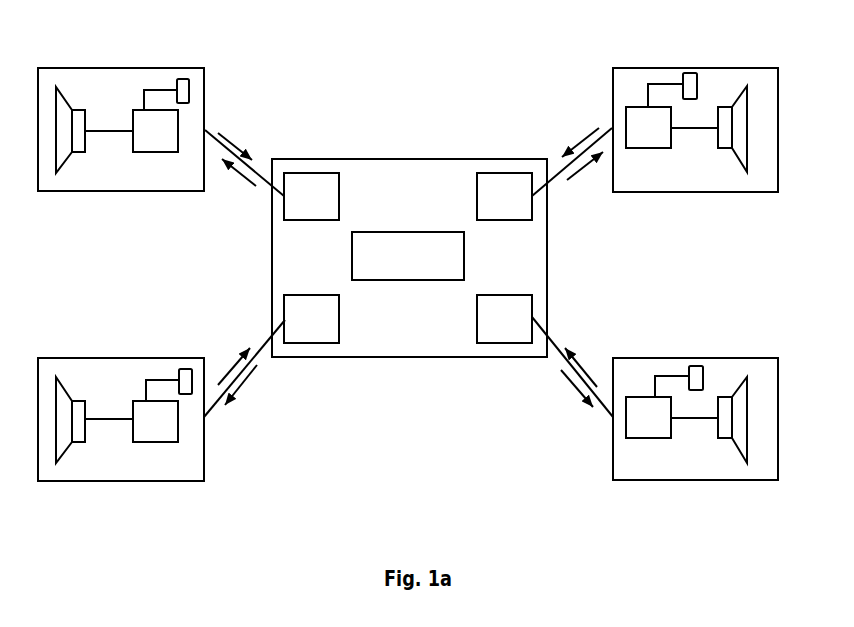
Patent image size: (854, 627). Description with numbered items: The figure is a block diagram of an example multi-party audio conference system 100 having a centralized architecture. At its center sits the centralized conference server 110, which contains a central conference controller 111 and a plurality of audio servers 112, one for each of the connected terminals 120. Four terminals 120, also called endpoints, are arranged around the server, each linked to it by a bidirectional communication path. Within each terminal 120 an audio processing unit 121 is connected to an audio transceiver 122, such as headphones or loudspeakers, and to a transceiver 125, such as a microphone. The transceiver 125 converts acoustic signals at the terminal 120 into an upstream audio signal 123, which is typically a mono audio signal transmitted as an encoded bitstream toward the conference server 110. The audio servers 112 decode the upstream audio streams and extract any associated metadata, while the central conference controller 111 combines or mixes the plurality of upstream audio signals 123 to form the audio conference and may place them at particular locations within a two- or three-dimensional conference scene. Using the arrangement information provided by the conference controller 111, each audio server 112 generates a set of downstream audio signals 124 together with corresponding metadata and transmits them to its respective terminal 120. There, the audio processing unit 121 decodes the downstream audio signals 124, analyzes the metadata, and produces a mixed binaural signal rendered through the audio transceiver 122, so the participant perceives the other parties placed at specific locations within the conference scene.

The multi-party audio conference system 100 is at (188, 33).
The centralized conference server 110 is at (421, 158).
The central conference controller 111 is at (412, 280).
The audio server 112 is at (322, 173).
The terminal 120 is at (77, 71).
The audio processing unit 121 is at (153, 162).
The audio transceiver 122 is at (77, 152).
The upstream audio signal 123 is at (233, 137).
The downstream audio signal 124 is at (238, 172).
The transceiver 125 is at (182, 79).